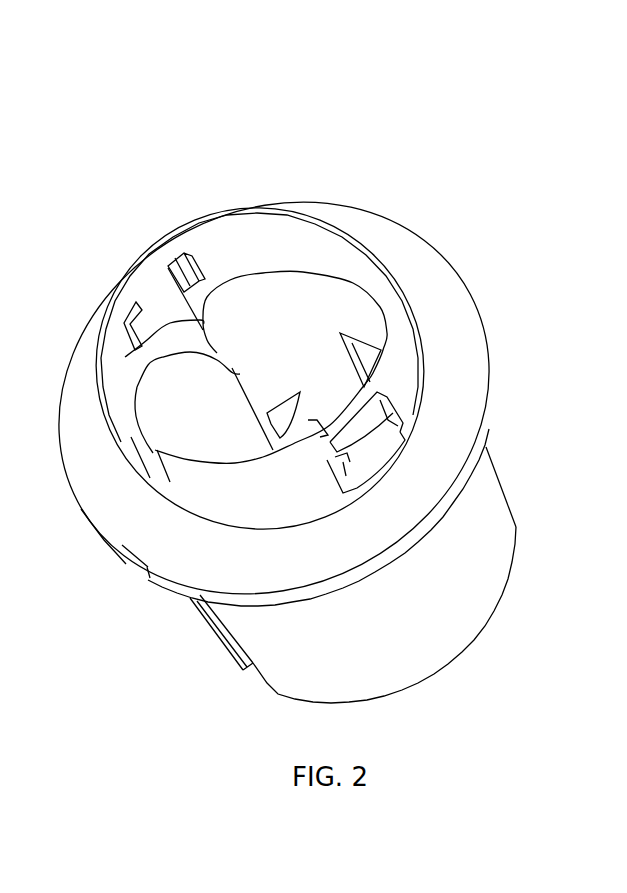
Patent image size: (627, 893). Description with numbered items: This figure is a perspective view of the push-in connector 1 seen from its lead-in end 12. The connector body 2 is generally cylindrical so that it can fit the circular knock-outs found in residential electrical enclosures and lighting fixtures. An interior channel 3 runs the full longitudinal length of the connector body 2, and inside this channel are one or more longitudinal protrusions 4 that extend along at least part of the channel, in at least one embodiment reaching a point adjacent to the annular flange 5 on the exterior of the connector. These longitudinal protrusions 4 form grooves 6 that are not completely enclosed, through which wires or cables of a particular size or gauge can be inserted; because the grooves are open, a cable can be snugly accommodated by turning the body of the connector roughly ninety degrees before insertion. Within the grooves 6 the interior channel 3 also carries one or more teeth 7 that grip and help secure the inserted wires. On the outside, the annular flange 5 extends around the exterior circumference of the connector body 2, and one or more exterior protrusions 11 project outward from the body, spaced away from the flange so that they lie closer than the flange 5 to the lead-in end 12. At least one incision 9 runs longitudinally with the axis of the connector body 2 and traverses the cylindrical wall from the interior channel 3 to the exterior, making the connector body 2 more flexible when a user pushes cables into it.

The push-in connector 1 is at (250, 178).
The connector body 2 is at (477, 517).
The interior channel 3 is at (307, 323).
The longitudinal protrusion 4 is at (168, 268).
The annular flange 5 is at (453, 288).
The groove 6 is at (178, 377).
The tooth 7 is at (282, 425).
The incision 9 is at (183, 513).
The exterior protrusion 11 is at (402, 430).
The lead-in end 12 is at (313, 203).